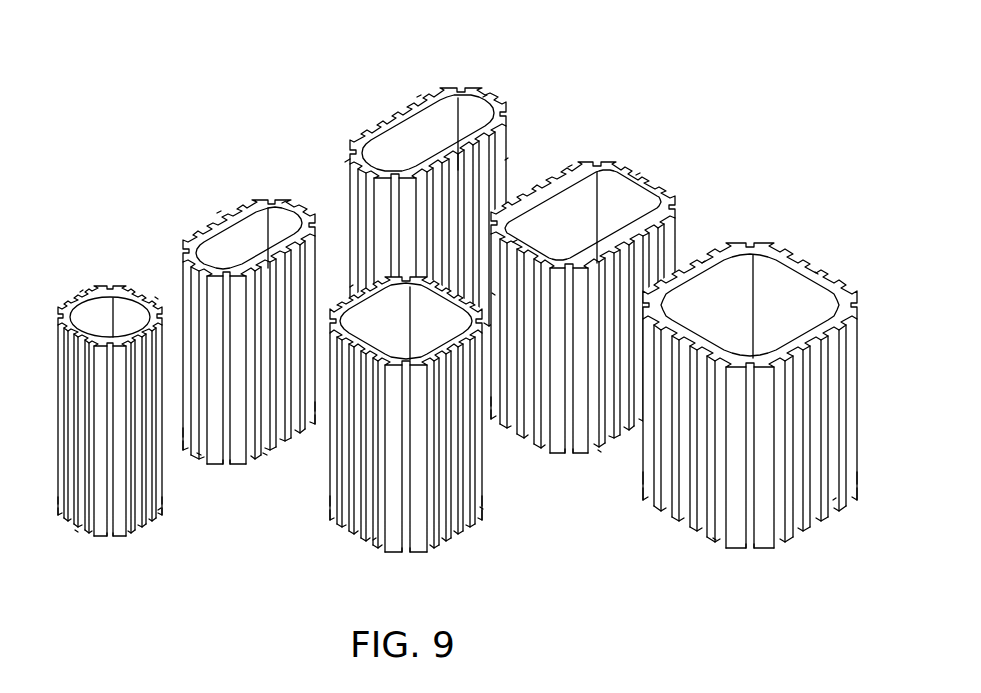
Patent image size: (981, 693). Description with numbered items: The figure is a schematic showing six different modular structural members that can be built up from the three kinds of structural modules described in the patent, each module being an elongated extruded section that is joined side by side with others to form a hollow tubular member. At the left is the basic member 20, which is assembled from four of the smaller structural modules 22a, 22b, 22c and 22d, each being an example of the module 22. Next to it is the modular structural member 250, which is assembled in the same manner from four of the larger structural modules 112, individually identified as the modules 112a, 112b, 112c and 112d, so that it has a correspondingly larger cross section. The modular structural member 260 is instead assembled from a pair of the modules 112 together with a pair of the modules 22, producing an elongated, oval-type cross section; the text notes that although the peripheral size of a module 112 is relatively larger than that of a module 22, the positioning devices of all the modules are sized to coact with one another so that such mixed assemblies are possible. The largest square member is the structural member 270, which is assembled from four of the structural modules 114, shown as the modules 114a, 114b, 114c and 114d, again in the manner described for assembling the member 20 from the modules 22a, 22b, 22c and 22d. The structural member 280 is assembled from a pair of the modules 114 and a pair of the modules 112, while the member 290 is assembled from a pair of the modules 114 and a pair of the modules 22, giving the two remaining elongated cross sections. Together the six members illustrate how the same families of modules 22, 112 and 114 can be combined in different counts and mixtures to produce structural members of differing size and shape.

The member 20 is at (99, 248).
The module 22 is at (347, 160).
The module 22a is at (158, 510).
The module 22b is at (75, 530).
The module 22c is at (80, 292).
The module 22d is at (155, 297).
The structural module 112 is at (217, 213).
The module 112a is at (480, 507).
The module 112b is at (373, 540).
The module 112c is at (350, 287).
The module 112d is at (492, 293).
The structural module 114 is at (417, 97).
The module 114a is at (833, 500).
The module 114b is at (713, 538).
The module 114c is at (702, 263).
The module 114d is at (815, 272).
The modular structural member 250 is at (468, 553).
The modular structural member 260 is at (238, 168).
The structural member 270 is at (758, 575).
The structural member 280 is at (630, 147).
The member 290 is at (467, 68).